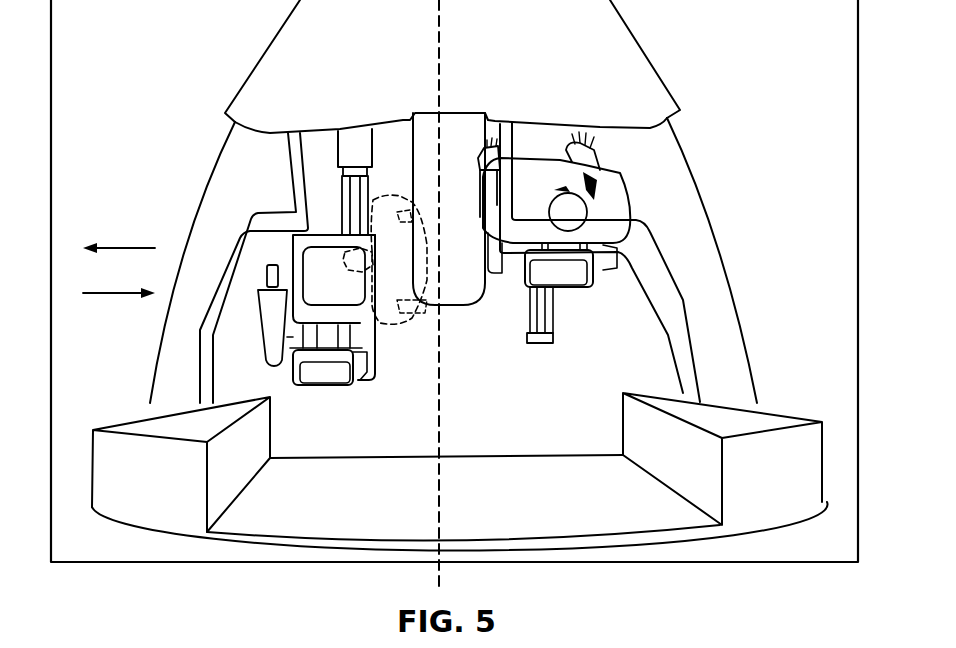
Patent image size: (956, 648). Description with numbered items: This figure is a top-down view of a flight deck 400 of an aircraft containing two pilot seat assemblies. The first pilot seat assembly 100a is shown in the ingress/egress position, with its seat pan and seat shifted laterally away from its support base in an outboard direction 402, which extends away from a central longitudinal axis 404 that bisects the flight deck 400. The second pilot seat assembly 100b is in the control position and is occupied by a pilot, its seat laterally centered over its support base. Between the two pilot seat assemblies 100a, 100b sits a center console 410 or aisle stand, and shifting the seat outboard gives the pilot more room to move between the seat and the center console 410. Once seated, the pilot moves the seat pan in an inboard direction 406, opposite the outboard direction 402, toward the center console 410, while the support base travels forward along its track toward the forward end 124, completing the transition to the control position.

The forward end 124 is at (338, 175).
The flight deck 400 is at (215, 157).
The first pilot seat assembly 100a is at (315, 272).
The second pilot seat assembly 100b is at (612, 252).
The outboard direction 402 is at (118, 248).
The inboard direction 406 is at (118, 293).
The center console 410 is at (458, 267).
The central longitudinal axis 404 is at (438, 571).